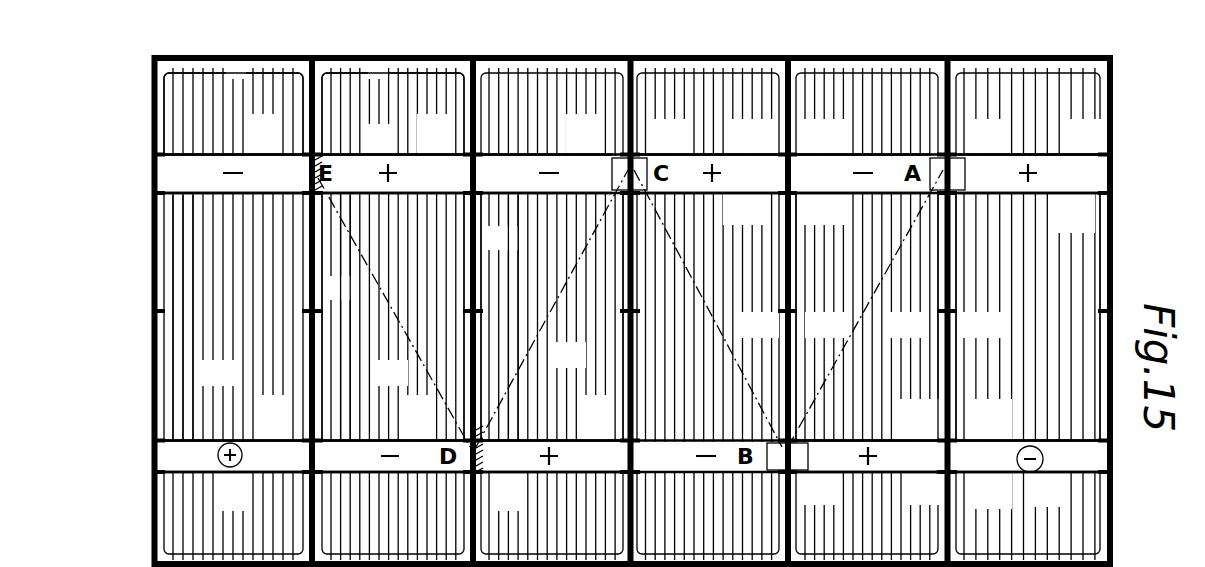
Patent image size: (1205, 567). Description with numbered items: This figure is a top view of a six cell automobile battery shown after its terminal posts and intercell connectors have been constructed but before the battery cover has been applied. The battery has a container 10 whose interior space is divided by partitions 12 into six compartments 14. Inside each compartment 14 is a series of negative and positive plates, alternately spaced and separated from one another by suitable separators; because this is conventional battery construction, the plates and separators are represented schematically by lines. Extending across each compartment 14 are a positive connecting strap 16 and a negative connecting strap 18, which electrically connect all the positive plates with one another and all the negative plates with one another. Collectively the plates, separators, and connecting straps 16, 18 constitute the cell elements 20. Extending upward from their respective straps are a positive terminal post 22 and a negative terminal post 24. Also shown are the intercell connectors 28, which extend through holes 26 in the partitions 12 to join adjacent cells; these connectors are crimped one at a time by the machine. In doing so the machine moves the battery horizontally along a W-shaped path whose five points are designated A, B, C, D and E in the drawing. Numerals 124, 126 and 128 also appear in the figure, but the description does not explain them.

The container 10 is at (503, 57).
The partitions 12 is at (316, 293).
The compartments 14 is at (240, 78).
The positive connecting strap 16 is at (440, 153).
The negative connecting strap 18 is at (276, 153).
The cell elements 20 is at (252, 366).
The positive terminal post 22 is at (230, 470).
The negative terminal post 24 is at (1032, 473).
The holes 26 is at (318, 165).
The intercell connectors 28 is at (645, 159).
The bus bar segment 124 is at (779, 155).
The bus bar segment 126 is at (796, 153).
The grid line segment 128 is at (781, 306).